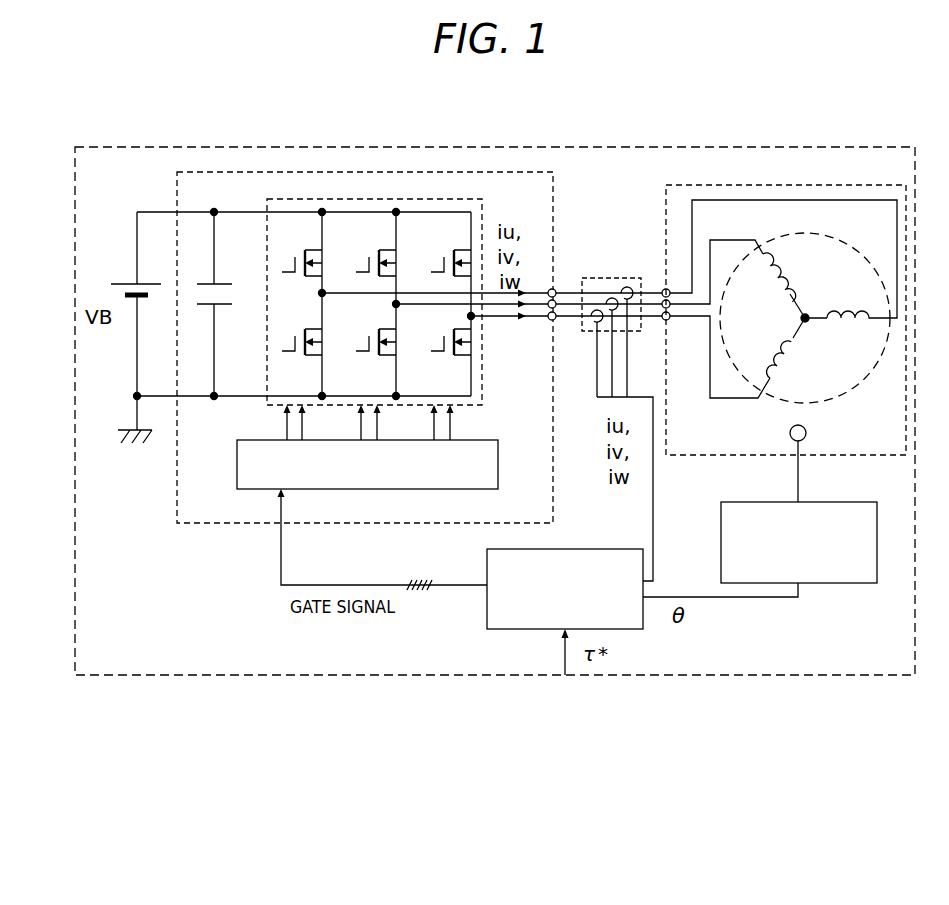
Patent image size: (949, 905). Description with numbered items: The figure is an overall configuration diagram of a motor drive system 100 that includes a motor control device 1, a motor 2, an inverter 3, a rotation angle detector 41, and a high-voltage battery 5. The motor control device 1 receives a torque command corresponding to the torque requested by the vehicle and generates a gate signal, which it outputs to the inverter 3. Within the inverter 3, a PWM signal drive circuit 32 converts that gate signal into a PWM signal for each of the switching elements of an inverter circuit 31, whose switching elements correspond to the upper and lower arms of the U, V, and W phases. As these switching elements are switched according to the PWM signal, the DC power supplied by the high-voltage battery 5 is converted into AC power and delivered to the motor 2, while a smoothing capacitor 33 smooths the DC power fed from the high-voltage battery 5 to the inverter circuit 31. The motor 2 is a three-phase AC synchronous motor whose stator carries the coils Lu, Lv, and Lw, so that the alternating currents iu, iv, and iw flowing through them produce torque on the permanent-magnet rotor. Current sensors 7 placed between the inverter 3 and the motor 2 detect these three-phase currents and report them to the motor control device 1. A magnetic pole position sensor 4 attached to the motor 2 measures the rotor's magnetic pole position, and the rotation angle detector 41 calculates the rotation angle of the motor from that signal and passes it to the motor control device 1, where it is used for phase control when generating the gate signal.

The motor drive system 100 is at (842, 147).
The motor control device 1 is at (585, 549).
The motor 2 is at (800, 185).
The inverter 3 is at (553, 185).
The inverter circuit 31 is at (482, 199).
The PWM signal drive circuit 32 is at (498, 445).
The smoothing capacitor 33 is at (206, 283).
The magnetic pole position sensor 4 is at (790, 430).
The rotation angle detector 41 is at (818, 502).
The high-voltage battery 5 is at (126, 283).
The current sensor 7 is at (621, 278).